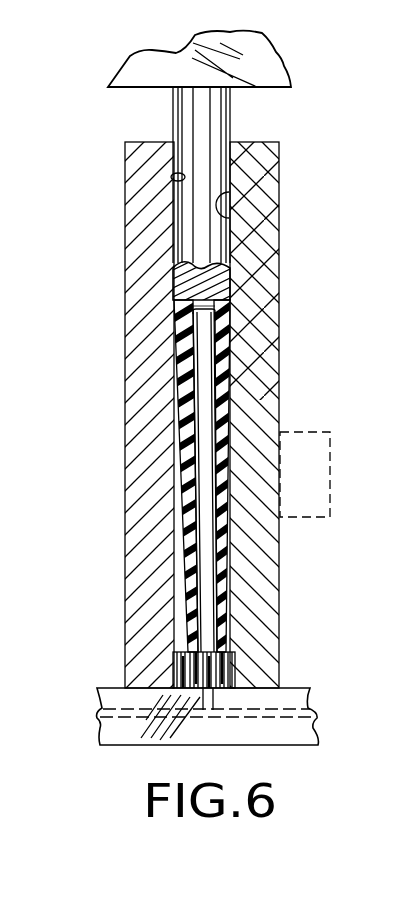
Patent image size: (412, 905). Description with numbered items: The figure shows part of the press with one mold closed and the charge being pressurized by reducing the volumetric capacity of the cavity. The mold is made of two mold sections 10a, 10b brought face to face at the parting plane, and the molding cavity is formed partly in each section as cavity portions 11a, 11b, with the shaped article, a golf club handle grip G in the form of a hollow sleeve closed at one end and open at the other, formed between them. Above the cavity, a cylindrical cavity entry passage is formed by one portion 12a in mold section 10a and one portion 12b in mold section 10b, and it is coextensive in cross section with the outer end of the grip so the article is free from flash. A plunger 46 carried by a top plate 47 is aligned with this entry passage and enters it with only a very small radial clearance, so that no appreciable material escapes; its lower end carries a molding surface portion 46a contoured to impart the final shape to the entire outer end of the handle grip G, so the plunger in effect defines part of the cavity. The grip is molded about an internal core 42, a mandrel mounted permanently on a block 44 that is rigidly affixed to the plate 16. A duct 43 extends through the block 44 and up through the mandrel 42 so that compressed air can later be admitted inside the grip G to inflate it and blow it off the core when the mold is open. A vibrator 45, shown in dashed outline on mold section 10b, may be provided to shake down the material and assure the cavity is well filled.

The mold section 10a is at (140, 156).
The mold section 10b is at (257, 157).
The entry passage portion 12a is at (176, 179).
The entry passage portion 12b is at (230, 217).
The top plate 47 is at (282, 60).
The plunger 46 is at (222, 123).
The molding surface portion 46a is at (238, 271).
The golf club handle grip G is at (220, 328).
The internal core 42 is at (207, 370).
The molding cavity portion 11a is at (188, 594).
The molding cavity portion 11b is at (225, 577).
The vibrator 45 is at (323, 478).
The block 44 is at (232, 670).
The plate 16 is at (307, 700).
The duct 43 is at (222, 717).